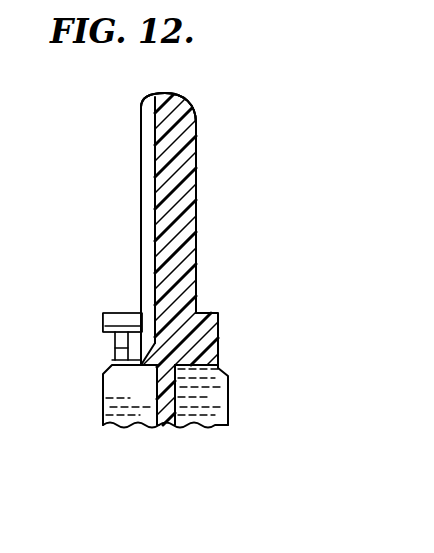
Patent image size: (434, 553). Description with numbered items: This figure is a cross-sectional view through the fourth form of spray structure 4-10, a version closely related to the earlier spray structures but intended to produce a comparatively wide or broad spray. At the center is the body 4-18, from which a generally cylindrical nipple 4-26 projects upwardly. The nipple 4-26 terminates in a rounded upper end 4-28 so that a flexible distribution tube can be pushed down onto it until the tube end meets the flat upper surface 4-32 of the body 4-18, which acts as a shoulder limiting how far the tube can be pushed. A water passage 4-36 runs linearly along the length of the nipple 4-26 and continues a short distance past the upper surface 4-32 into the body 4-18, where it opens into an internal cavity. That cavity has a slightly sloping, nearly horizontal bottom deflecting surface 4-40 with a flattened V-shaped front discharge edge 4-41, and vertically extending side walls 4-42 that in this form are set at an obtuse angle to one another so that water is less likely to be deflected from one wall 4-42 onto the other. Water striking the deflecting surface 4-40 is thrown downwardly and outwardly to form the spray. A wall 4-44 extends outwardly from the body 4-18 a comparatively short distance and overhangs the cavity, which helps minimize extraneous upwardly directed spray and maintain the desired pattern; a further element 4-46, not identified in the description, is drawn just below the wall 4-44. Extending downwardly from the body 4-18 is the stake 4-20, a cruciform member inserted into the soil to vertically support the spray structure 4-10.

The spray structure 4-10 is at (242, 151).
The body 4-18 is at (226, 311).
The stake 4-20 is at (228, 389).
The nipple 4-26 is at (197, 179).
The rounded upper end 4-28 is at (167, 93).
The flat upper surface 4-32 is at (125, 312).
The water passage 4-36 is at (148, 195).
The bottom deflecting surface 4-40 is at (137, 342).
The front discharge edge 4-41 is at (115, 355).
The side wall 4-42 is at (115, 341).
The wall 4-44 is at (118, 322).
The clip lower edge 4-46 is at (118, 326).